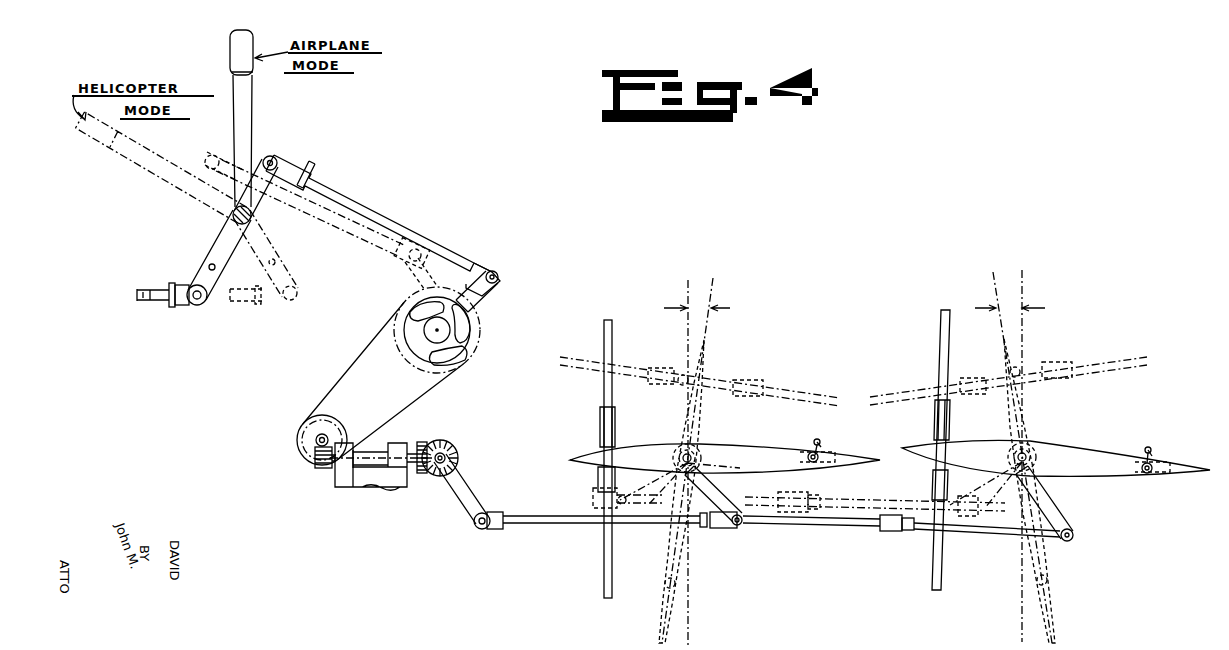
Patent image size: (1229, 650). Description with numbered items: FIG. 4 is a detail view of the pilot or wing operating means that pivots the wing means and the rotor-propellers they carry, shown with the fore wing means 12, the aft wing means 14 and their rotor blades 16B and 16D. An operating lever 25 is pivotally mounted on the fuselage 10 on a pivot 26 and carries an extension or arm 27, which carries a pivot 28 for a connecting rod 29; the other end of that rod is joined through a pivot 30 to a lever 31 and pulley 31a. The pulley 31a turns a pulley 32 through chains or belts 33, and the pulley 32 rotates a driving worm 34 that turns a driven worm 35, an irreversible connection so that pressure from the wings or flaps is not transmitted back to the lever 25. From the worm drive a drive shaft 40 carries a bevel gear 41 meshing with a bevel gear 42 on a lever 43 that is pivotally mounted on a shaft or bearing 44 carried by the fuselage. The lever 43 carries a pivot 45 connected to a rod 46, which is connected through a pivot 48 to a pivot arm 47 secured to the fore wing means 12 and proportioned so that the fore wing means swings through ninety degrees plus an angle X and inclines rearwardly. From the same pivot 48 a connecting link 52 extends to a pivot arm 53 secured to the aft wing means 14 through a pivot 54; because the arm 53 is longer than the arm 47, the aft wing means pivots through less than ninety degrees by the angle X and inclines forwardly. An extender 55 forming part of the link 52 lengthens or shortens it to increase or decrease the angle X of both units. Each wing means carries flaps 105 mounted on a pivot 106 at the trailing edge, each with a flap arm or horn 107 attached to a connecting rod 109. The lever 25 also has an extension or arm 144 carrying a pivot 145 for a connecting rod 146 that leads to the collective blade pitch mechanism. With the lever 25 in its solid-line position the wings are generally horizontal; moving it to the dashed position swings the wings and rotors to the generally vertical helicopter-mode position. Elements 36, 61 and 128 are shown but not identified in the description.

The fuselage 10 is at (340, 488).
The fore wing means 12 is at (712, 445).
The aft wing means 14 is at (1040, 445).
The rotor blade 16B is at (735, 370).
The rotor blade 16D is at (1047, 358).
The operating lever 25 is at (254, 102).
The pivot 26 is at (233, 214).
The extension or arm 27 is at (263, 204).
The pivot 28 is at (275, 158).
The connecting rod 29 is at (364, 207).
The pivot 30 is at (498, 273).
The lever 31 is at (482, 293).
The pulley 31a is at (472, 352).
The pulley 32 is at (306, 424).
The chains or belts 33 is at (356, 366).
The driving worm 34 is at (315, 441).
The driven worm 35 is at (320, 470).
The drive pulley hub 36 is at (432, 336).
The drive shaft 40 is at (372, 454).
The bevel gear 41 is at (425, 442).
The bevel gear 42 is at (448, 443).
The lever 43 is at (470, 480).
The shaft or bearing 44 is at (456, 448).
The pivot 45 is at (481, 529).
The rod 46 is at (558, 525).
The pivot arm 47 is at (720, 486).
The pivot 48 is at (738, 528).
The connecting link 52 is at (828, 527).
The pivot arm 53 is at (1055, 504).
The pivot 54 is at (1075, 535).
The extender 55 is at (896, 532).
The strut tube 61 is at (603, 328).
The flaps 105 is at (842, 462).
The pivot 106 is at (820, 455).
The flap arm or horn 107 is at (822, 440).
The connecting rod 109 is at (814, 440).
The wing hub 128 is at (680, 450).
The extension or arm 144 is at (222, 237).
The pivot 145 is at (196, 306).
The connecting rod 146 is at (147, 303).